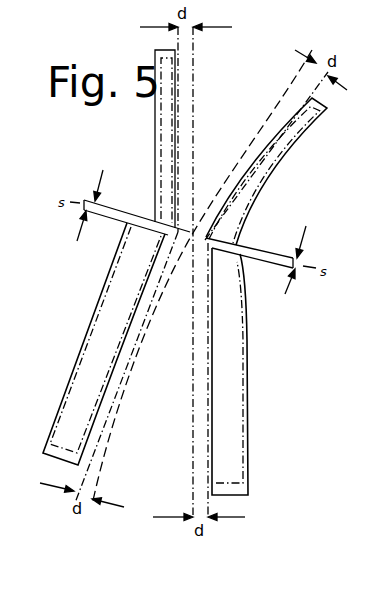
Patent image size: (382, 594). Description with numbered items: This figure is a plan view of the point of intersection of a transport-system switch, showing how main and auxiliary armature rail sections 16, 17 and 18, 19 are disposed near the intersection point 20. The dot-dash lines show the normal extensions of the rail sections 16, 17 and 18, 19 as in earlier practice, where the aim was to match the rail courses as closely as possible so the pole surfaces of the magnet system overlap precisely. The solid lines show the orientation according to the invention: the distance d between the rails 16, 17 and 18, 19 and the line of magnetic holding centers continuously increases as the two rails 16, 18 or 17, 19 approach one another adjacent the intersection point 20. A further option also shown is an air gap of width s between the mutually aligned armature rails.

The armature rail section 16 is at (97, 350).
The armature rail section 17 is at (226, 398).
The armature rail section 18 is at (165, 127).
The armature rail section 19 is at (276, 149).
The intersection point 20 is at (192, 233).